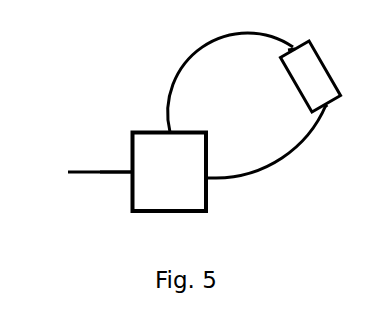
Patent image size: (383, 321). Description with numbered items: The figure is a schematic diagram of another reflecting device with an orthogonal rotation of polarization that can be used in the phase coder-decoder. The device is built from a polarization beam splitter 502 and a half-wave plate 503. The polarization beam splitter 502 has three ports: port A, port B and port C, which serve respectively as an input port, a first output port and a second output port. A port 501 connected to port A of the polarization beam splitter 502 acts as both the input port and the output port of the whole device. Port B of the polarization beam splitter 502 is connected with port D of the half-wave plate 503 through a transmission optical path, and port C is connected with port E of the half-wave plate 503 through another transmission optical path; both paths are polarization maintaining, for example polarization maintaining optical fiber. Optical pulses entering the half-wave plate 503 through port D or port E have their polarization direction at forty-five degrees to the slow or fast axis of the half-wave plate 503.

The port 501 is at (80, 173).
The polarization beam splitter 502 is at (170, 172).
The half-wave plate 503 is at (310, 76).
The port A is at (116, 159).
The port B is at (218, 82).
The port C is at (266, 157).
The port D is at (296, 31).
The port E is at (336, 114).